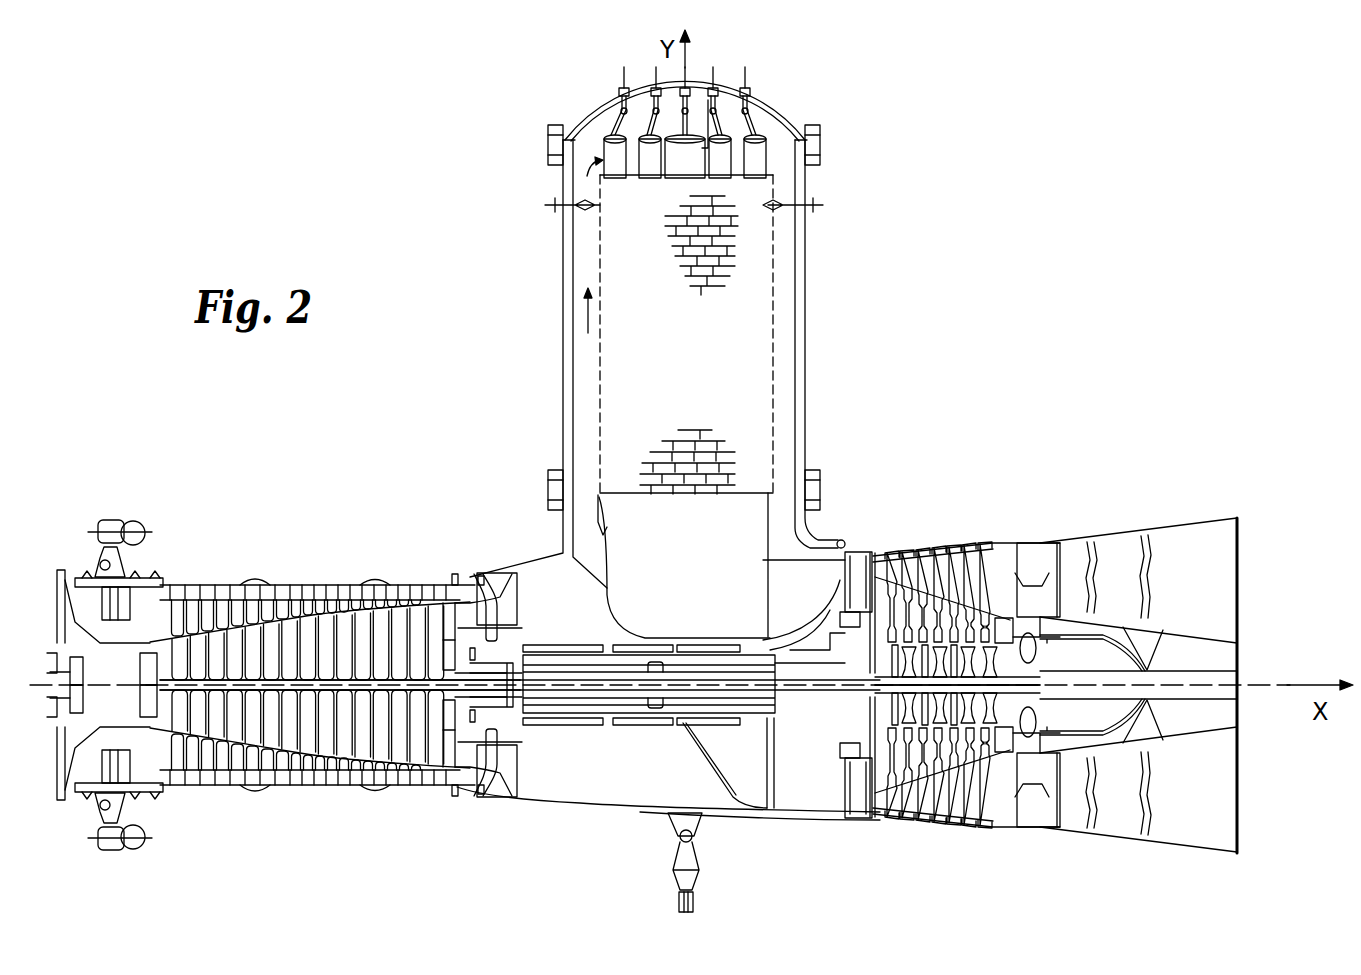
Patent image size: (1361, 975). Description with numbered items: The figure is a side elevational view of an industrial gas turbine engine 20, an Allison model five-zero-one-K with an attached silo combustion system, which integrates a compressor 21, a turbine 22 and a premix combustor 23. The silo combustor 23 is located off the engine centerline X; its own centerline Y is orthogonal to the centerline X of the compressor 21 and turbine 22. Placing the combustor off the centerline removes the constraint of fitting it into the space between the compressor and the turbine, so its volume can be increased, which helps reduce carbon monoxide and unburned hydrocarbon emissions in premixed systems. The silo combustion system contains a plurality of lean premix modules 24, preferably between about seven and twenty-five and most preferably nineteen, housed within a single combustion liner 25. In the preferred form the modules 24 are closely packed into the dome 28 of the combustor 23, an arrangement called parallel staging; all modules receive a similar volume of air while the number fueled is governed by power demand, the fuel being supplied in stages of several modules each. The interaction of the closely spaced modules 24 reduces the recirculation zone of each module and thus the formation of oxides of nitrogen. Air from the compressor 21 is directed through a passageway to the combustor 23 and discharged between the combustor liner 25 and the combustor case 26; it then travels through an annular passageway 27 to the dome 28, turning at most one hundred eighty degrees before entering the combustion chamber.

The industrial gas turbine engine 20 is at (626, 824).
The compressor 21 is at (312, 584).
The turbine 22 is at (975, 536).
The premix combustor 23 is at (806, 328).
The lean premix modules 24 is at (757, 155).
The combustor liner 25 is at (773, 268).
The combustor case 26 is at (804, 184).
The annular passageway 27 is at (584, 244).
The dome 28 is at (583, 113).